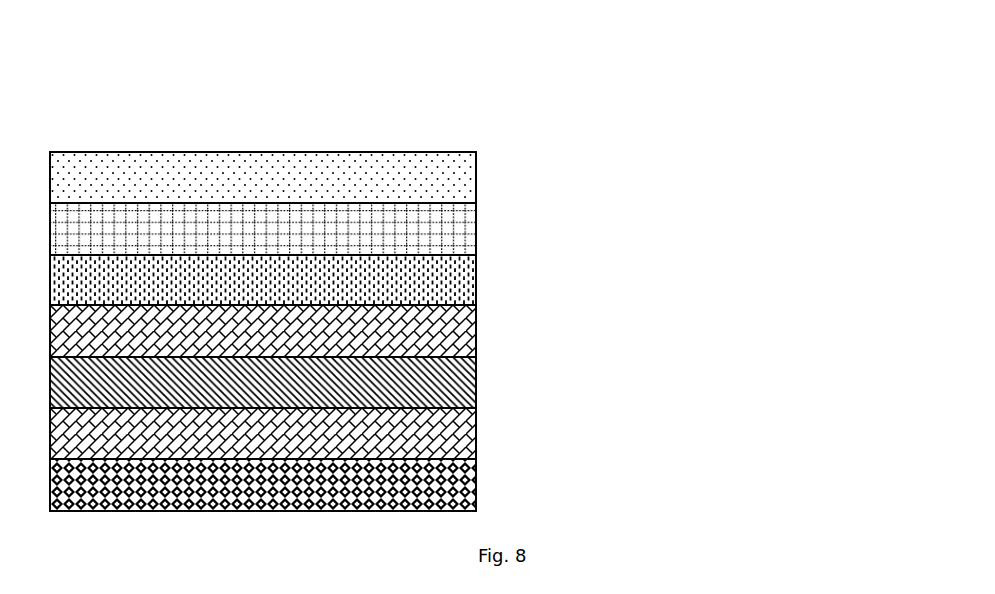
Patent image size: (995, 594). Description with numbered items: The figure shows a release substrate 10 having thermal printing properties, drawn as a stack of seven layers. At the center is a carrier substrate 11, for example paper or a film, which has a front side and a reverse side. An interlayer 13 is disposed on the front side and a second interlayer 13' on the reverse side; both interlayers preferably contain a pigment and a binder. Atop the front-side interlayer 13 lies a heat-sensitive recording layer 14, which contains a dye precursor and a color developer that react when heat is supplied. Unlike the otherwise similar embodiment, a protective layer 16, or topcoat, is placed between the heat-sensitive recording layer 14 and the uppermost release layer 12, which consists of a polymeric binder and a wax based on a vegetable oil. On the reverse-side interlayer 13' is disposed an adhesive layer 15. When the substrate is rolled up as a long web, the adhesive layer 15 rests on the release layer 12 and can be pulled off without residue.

The release substrate 10 is at (465, 127).
The release layer 12 is at (476, 173).
The protective layer 16 is at (476, 225).
The heat-sensitive recording layer 14 is at (476, 277).
The interlayer 13 is at (350, 313).
The carrier substrate 11 is at (476, 380).
The interlayer 13' is at (352, 416).
The adhesive layer 15 is at (476, 482).